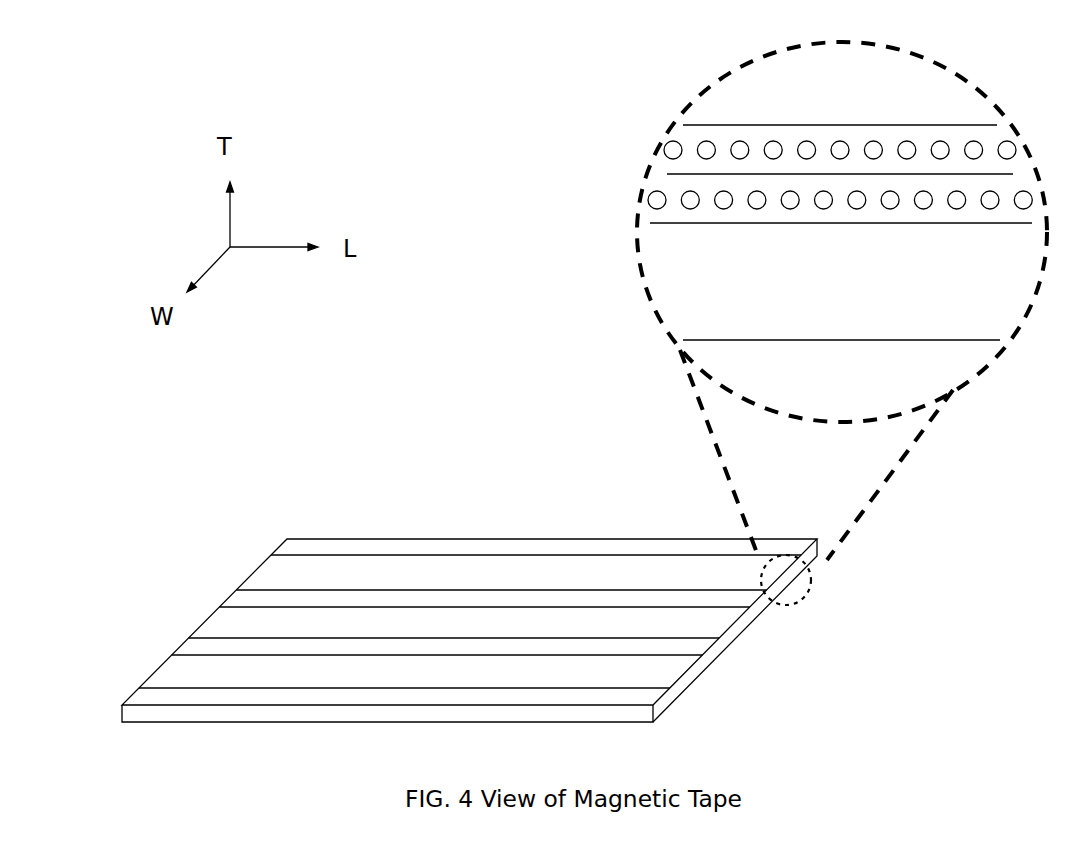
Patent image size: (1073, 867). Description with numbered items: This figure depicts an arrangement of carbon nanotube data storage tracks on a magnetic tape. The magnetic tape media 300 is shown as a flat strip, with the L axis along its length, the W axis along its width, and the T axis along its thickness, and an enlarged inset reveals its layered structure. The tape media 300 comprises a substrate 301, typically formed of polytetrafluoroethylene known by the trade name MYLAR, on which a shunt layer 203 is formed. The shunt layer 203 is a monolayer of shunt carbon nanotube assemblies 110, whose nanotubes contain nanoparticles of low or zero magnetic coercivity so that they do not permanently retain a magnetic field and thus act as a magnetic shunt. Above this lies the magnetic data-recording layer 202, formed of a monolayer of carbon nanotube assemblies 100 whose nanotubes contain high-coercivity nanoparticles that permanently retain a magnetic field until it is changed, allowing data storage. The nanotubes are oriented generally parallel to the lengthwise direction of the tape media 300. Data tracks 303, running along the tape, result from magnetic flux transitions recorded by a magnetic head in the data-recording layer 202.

The carbon nanotube assemblies 100 is at (720, 132).
The shunt carbon nanotube assemblies 110 is at (672, 186).
The magnetic data-recording layer 202 is at (747, 116).
The shunt layer 203 is at (705, 234).
The magnetic tape media 300 is at (297, 497).
The substrate 301 is at (841, 306).
The data tracks 303 is at (642, 564).